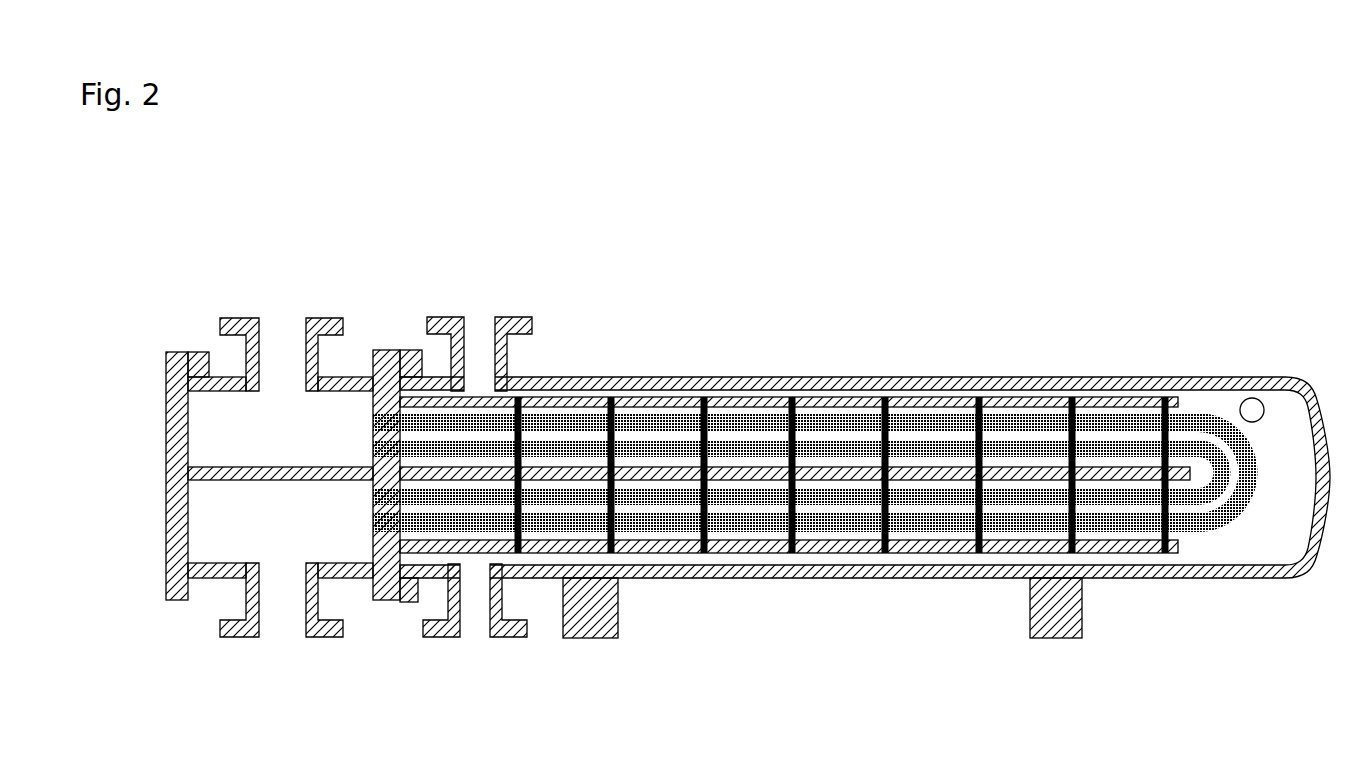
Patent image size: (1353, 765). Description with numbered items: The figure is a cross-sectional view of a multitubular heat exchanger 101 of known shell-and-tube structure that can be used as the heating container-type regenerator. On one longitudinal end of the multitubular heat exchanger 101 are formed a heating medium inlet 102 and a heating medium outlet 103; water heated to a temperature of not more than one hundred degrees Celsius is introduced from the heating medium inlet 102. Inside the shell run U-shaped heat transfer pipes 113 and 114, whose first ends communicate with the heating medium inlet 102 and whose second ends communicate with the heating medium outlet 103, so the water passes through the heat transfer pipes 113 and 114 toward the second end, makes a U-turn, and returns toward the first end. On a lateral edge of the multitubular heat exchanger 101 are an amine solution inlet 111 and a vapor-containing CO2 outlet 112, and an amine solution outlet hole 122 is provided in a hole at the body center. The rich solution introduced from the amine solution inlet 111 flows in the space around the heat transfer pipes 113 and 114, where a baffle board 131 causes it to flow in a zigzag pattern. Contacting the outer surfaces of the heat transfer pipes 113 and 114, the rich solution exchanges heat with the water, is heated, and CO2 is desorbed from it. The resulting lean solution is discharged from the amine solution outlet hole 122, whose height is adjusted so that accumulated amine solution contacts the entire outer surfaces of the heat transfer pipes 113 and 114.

The multitubular heat exchanger 101 is at (211, 234).
The heating medium inlet 102 is at (283, 331).
The heating medium outlet 103 is at (283, 627).
The amine solution inlet 111 is at (472, 627).
The vapor-containing CO2 outlet 112 is at (476, 322).
The heat transfer pipe 113 is at (833, 420).
The heat transfer pipe 114 is at (922, 445).
The amine solution outlet hole 122 is at (1252, 398).
The baffle board 131 is at (699, 415).